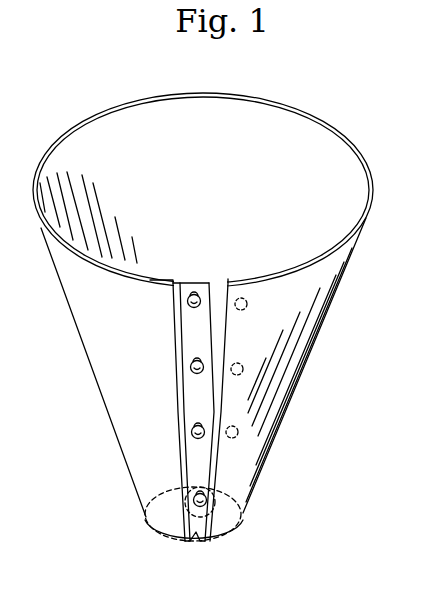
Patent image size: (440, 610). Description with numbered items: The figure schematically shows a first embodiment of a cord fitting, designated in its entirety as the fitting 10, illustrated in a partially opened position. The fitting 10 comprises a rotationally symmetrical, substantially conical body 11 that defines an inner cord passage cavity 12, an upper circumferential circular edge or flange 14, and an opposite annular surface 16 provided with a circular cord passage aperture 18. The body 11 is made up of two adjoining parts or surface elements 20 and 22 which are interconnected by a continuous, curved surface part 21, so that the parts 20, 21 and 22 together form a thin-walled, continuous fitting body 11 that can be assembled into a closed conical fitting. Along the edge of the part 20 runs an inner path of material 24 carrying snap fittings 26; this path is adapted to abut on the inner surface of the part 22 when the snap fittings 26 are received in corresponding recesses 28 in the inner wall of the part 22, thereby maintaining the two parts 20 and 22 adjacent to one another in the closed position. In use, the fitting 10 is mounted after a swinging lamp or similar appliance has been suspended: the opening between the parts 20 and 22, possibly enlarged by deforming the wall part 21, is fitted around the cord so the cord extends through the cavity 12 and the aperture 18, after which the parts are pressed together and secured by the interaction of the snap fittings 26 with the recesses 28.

The fitting 10 is at (233, 325).
The conical body 11 is at (302, 334).
The inner cord passage cavity 12 is at (116, 150).
The upper circumferential circular edge or flange 14 is at (141, 100).
The annular surface 16 is at (153, 543).
The circular cord passage aperture 18 is at (174, 545).
The first part or surface element 20 is at (173, 390).
The continuous curved surface part 21 is at (203, 174).
The second part or surface element 22 is at (278, 387).
The inner path of material 24 is at (189, 282).
The snap fittings 26 is at (201, 300).
The recesses 28 is at (247, 303).